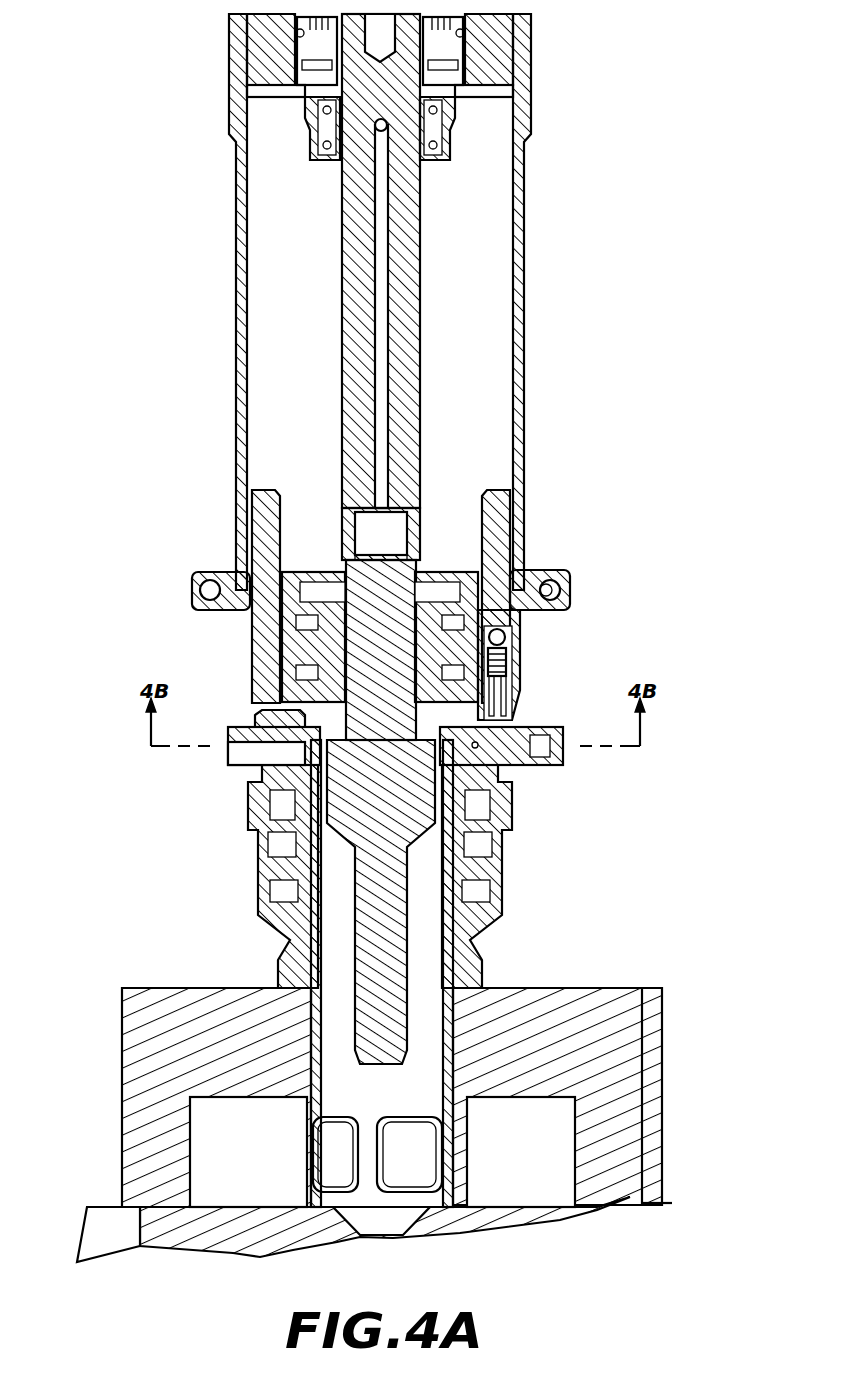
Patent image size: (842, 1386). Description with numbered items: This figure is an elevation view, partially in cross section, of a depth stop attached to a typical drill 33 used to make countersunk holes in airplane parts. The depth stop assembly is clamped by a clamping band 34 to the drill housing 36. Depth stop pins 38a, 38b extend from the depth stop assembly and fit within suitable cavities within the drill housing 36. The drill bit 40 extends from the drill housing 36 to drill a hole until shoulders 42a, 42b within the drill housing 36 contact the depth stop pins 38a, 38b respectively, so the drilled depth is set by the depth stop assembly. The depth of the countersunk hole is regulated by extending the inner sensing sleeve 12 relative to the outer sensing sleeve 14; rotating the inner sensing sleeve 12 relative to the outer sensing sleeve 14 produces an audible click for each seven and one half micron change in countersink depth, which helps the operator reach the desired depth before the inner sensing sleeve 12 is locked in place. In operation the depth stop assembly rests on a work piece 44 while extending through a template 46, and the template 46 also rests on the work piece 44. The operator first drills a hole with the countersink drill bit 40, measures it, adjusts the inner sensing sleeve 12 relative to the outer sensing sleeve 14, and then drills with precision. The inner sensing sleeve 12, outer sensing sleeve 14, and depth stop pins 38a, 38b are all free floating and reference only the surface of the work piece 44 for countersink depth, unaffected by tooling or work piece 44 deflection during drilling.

The inner sensing sleeve 12 is at (458, 1185).
The outer sensing sleeve 14 is at (480, 810).
The drill 33 is at (112, 234).
The clamping band 34 is at (560, 572).
The drill housing 36 is at (530, 245).
The depth stop pin 38a is at (505, 514).
The depth stop pin 38b is at (250, 520).
The drill bit 40 is at (390, 950).
The shoulder 42a is at (530, 85).
The shoulder 42b is at (232, 85).
The work piece 44 is at (225, 1207).
The template 46 is at (640, 1050).